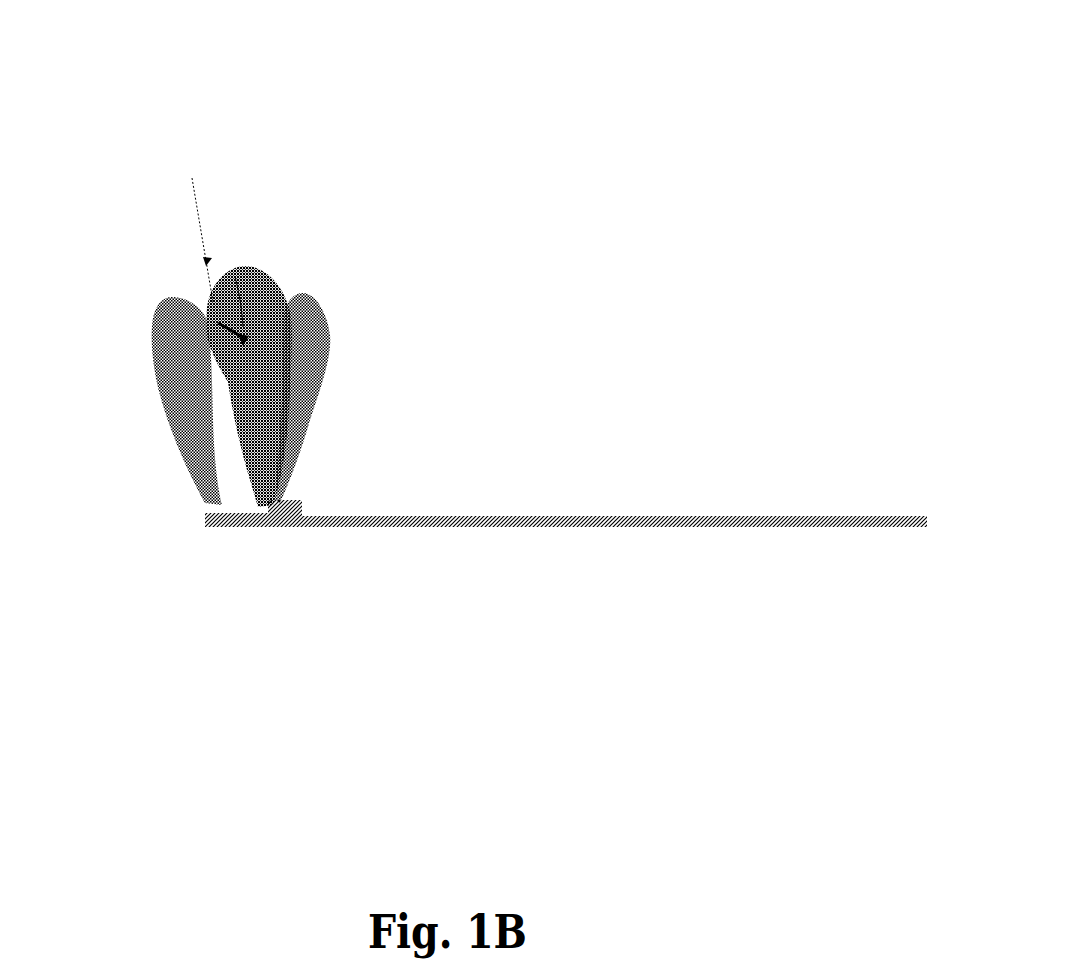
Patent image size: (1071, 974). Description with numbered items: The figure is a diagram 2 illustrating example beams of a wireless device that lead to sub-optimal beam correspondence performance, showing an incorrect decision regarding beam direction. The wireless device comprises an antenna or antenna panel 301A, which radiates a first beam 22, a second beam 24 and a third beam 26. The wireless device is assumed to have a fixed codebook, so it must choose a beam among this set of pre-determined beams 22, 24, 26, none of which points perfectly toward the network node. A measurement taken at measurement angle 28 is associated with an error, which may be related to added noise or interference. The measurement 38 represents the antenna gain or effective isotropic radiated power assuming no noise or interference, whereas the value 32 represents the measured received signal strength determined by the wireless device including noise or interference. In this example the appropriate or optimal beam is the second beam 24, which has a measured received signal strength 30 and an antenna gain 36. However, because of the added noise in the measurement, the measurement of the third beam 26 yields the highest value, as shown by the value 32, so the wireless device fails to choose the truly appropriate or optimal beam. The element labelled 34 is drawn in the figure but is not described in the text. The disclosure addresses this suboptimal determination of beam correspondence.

The diagram 2 is at (183, 56).
The first beam 22 is at (323, 307).
The second beam 24 is at (260, 272).
The third beam 26 is at (166, 356).
The measurement angle 28 is at (198, 213).
The measured received signal strength 30 is at (246, 339).
The value determined by the wireless device 32 is at (208, 261).
The third region 34 is at (235, 387).
The antenna gain 36 is at (207, 298).
The measurement 38 is at (228, 353).
The antenna 301A is at (277, 510).